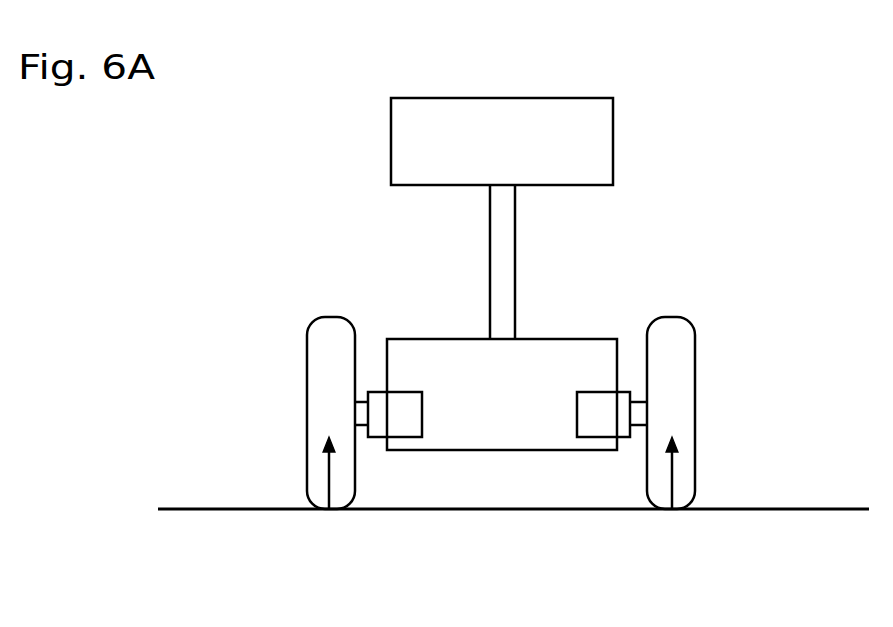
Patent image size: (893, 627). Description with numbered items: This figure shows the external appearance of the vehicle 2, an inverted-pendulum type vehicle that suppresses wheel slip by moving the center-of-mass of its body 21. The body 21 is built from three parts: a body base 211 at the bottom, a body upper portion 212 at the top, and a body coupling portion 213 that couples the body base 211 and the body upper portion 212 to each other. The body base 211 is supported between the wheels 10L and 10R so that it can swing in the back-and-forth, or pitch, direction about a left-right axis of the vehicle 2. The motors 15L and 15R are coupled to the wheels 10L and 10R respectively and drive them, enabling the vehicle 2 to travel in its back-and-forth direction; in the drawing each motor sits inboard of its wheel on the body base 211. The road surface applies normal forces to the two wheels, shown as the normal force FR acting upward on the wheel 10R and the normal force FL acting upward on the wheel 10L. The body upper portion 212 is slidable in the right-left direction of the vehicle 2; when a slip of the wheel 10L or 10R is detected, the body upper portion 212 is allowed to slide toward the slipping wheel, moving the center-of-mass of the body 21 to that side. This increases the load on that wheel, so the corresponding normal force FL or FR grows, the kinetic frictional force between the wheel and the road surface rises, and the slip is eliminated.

The vehicle 2 is at (323, 77).
The body 21 is at (655, 191).
The body upper portion 212 is at (543, 98).
The body coupling portion 213 is at (515, 245).
The body base 211 is at (542, 339).
The wheel 10R is at (323, 317).
The wheel 10L is at (695, 380).
The motor 15R is at (403, 430).
The motor 15L is at (603, 432).
The normal force FR is at (329, 478).
The normal force FL is at (672, 470).